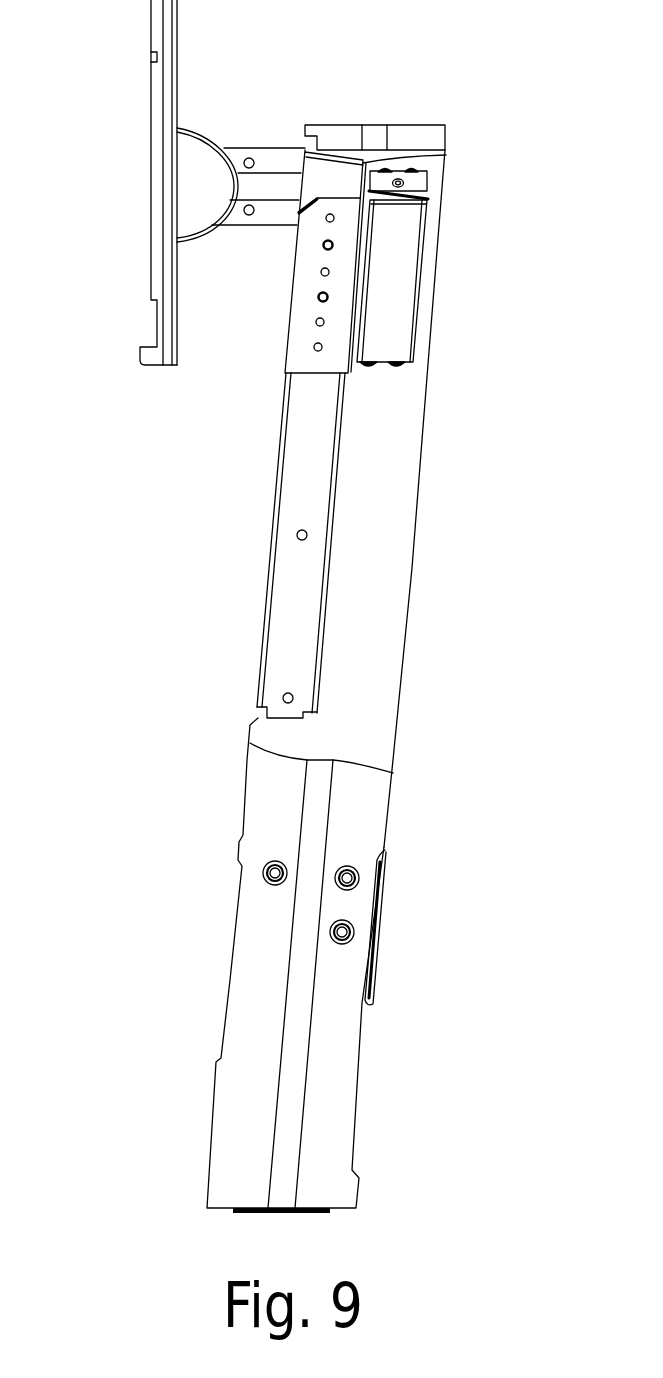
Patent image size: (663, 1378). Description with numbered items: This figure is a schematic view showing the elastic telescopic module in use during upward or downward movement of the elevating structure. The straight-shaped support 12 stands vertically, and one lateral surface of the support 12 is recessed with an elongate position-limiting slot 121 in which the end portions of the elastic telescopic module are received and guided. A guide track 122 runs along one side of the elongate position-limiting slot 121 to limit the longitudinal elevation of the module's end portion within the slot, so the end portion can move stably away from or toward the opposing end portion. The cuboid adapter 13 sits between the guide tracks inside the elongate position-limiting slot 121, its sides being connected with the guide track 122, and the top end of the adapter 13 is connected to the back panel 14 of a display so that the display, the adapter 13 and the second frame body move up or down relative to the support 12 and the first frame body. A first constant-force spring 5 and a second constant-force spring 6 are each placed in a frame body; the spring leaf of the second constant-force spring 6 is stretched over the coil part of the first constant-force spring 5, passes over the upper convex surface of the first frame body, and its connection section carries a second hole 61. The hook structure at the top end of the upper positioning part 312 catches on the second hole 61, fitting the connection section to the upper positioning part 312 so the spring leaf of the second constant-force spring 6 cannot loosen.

The support 12 is at (352, 669).
The elongate position-limiting slot 121 is at (363, 703).
The guide track 122 is at (297, 456).
The adapter 13 is at (303, 310).
The back panel 14 is at (162, 93).
The first constant-force spring 5 is at (397, 278).
The second constant-force spring 6 is at (448, 146).
The second hole 61 is at (400, 178).
The upper positioning part 312 is at (410, 194).